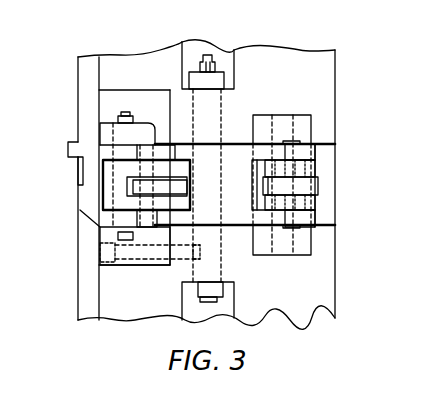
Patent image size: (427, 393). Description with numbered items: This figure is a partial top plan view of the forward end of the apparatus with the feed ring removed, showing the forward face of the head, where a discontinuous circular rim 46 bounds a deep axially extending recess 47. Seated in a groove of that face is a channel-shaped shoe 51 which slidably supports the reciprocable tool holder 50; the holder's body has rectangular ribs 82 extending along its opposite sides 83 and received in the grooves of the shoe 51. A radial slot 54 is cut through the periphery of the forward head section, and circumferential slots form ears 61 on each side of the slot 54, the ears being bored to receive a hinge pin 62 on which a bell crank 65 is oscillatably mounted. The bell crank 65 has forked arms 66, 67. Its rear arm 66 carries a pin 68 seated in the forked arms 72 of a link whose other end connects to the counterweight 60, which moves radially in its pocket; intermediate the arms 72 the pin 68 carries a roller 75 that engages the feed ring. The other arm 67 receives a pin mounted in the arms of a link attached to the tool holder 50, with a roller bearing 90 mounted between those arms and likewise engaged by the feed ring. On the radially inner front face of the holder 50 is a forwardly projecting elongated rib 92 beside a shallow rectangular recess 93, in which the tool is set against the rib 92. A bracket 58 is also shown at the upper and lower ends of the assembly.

The discontinuous circular rim 46 is at (87, 60).
The axially extending recess 47 is at (87, 72).
The reciprocable tool holder 50 is at (104, 152).
The shoe 51 is at (110, 98).
The radial slot 54 is at (230, 159).
The mounting bracket 58 is at (232, 65).
The counterweight 60 is at (300, 250).
The ear 61 is at (208, 112).
The hinge pin 62 is at (210, 300).
The bell crank 65 is at (240, 210).
The rear arm 66 is at (313, 155).
The forked arm 67 is at (140, 217).
The pin 68 is at (300, 230).
The forked arm 72 is at (315, 170).
The roller 75 is at (320, 185).
The rectangular rib 82 is at (125, 112).
The side 83 is at (107, 118).
The roller bearing 90 is at (137, 187).
The elongated rib 92 is at (68, 150).
The shallow rectangular recess 93 is at (80, 167).